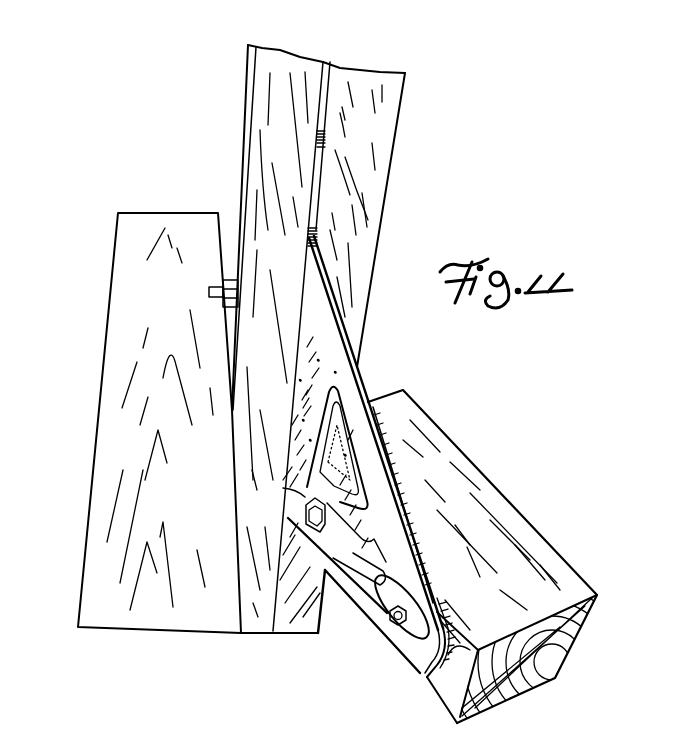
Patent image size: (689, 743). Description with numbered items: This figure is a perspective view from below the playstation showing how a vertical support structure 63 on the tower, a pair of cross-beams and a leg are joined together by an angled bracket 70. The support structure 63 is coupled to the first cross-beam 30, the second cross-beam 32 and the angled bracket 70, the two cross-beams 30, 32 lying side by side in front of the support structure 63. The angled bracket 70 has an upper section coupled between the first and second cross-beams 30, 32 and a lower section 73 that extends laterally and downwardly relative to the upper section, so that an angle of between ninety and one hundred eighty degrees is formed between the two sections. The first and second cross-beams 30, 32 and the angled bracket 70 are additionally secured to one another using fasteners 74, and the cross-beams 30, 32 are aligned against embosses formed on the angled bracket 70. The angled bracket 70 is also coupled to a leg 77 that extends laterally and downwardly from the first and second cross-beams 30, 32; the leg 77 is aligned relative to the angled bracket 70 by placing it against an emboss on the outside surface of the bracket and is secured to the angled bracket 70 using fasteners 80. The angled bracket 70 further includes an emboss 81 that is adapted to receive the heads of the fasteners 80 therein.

The first cross-beam 30 is at (363, 125).
The second cross-beam 32 is at (262, 110).
The support structure 63 is at (122, 344).
The angled bracket 70 is at (363, 593).
The lower section 73 is at (313, 343).
The fasteners 74 is at (210, 291).
The leg 77 is at (518, 532).
The fasteners 80 is at (305, 513).
The emboss 81 is at (407, 664).